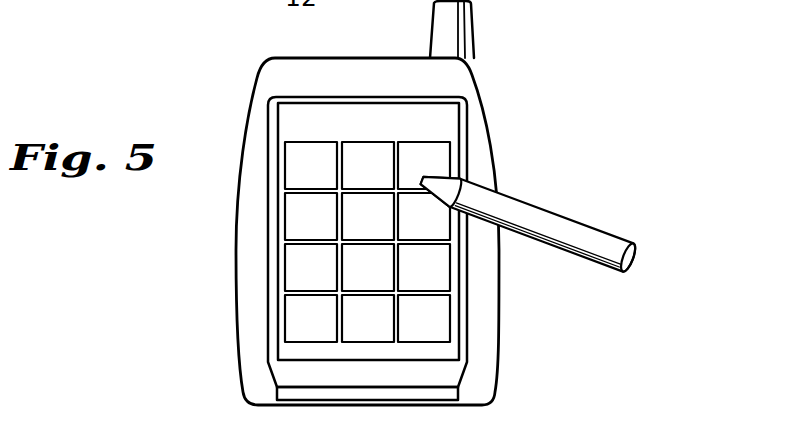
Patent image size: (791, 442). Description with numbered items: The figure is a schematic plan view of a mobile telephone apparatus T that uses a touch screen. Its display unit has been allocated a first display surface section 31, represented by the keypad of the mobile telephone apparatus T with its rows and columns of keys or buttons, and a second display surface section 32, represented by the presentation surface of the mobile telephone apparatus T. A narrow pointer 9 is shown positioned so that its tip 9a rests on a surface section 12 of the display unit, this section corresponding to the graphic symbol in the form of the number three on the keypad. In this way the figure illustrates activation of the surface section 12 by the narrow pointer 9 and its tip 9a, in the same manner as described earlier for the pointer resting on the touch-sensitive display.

The mobile telephone apparatus T is at (261, 76).
The surface section 12 is at (430, 150).
The first display surface section 31 is at (325, 278).
The second display surface section 32 is at (353, 134).
The narrow pointer 9 is at (573, 230).
The tip 9a is at (444, 178).